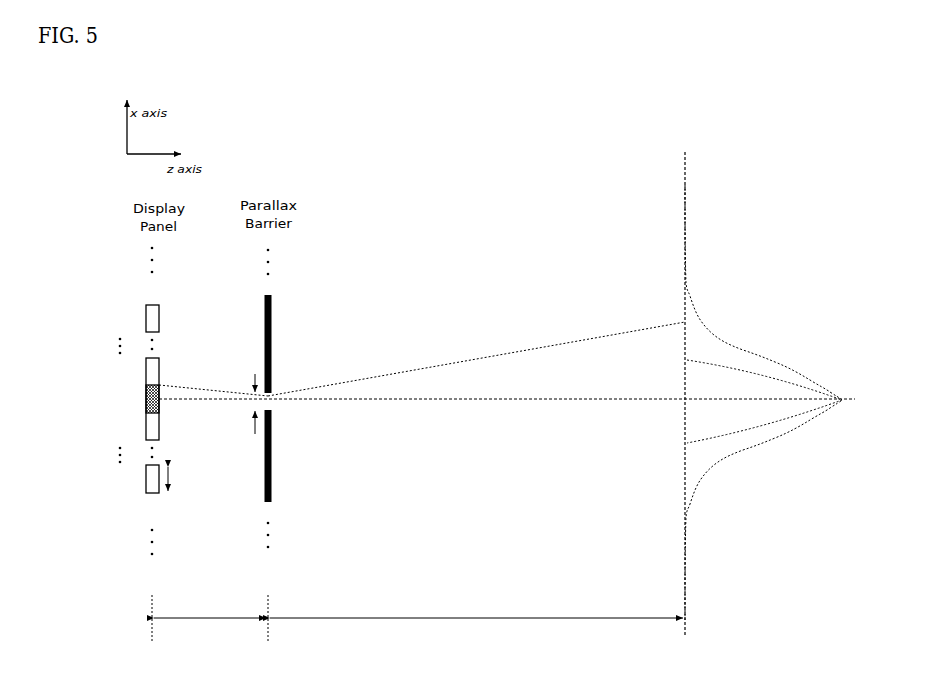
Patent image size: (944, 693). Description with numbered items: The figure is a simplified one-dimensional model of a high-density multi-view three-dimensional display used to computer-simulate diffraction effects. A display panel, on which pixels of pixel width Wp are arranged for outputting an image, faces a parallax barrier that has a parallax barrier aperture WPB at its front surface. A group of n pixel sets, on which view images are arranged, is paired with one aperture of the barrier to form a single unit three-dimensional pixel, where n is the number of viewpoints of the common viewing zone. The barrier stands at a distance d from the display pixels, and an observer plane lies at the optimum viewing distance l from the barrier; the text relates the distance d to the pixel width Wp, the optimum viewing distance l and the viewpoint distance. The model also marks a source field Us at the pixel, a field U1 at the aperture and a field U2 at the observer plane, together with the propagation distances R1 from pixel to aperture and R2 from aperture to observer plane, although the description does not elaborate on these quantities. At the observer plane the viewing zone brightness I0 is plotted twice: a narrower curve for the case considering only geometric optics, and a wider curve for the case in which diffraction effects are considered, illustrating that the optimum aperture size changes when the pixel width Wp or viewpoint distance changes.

The pixel sets n is at (88, 313).
The source pixel field Us(xi_s) Us is at (163, 382).
The pixel width Wp is at (184, 480).
The field at parallax barrier U1(x1,xi_s) U1 is at (272, 391).
The parallax barrier aperture WPB is at (237, 395).
The distance from pixel to slit R1 is at (213, 386).
The distance from slit to observer plane R2 is at (476, 359).
The field at observer plane U2(x2,xi_s) U2 is at (683, 321).
The viewing zone brightness I0 is at (774, 347).
The distance between display pixels and parallax barrier d is at (210, 618).
The optimum viewing distance l is at (476, 608).